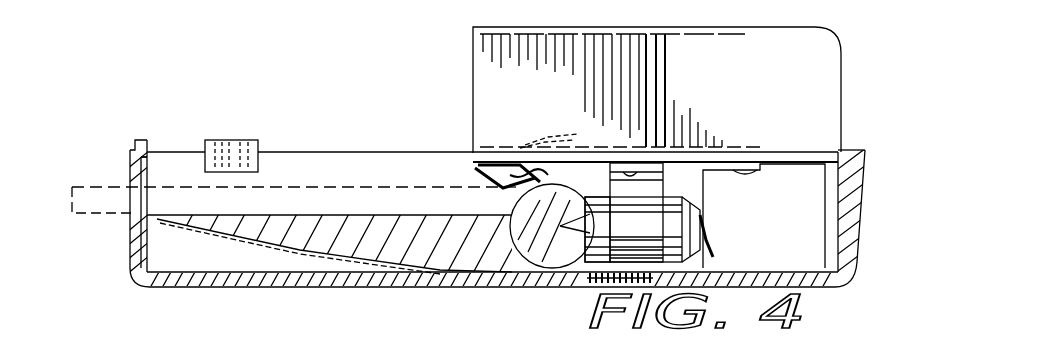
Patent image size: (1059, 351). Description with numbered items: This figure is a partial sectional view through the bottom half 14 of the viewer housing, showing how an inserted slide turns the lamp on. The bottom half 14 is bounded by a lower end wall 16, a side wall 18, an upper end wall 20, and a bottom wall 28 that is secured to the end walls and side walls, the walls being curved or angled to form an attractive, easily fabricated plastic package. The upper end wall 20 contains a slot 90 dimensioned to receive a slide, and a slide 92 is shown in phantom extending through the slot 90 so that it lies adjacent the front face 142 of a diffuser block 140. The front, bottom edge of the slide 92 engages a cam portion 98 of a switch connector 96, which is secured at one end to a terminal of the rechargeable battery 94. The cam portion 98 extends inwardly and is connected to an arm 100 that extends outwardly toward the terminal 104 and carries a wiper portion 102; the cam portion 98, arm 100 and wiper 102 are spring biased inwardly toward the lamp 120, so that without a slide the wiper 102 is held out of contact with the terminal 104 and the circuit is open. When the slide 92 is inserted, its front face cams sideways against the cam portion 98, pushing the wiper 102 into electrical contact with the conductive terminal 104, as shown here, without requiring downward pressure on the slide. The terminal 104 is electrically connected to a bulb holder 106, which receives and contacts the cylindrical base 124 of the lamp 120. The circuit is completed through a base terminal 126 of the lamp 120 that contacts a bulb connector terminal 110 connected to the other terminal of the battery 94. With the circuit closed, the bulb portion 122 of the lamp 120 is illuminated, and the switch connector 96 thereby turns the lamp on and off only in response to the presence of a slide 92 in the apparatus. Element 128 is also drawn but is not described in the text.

The bottom half 14 is at (403, 149).
The lower end wall 16 is at (860, 206).
The side wall 18 is at (338, 152).
The upper end wall 20 is at (136, 240).
The bottom wall 28 is at (345, 286).
The slot 90 is at (143, 165).
The slide 92 is at (70, 190).
The rechargeable battery 94 is at (850, 94).
The switch connector 96 is at (467, 155).
The cam portion 98 is at (475, 176).
The arm 100 is at (517, 173).
The wiper portion 102 is at (554, 172).
The terminal 104 is at (588, 162).
The bulb holder 106 is at (673, 165).
The bulb connector terminal 110 is at (705, 202).
The lamp 120 is at (535, 282).
The bulb portion 122 is at (512, 205).
The cylindrical base 124 is at (706, 252).
The base terminal 126 is at (702, 228).
The notch 128 is at (565, 274).
The diffuser block 140 is at (307, 228).
The front face 142 is at (334, 214).